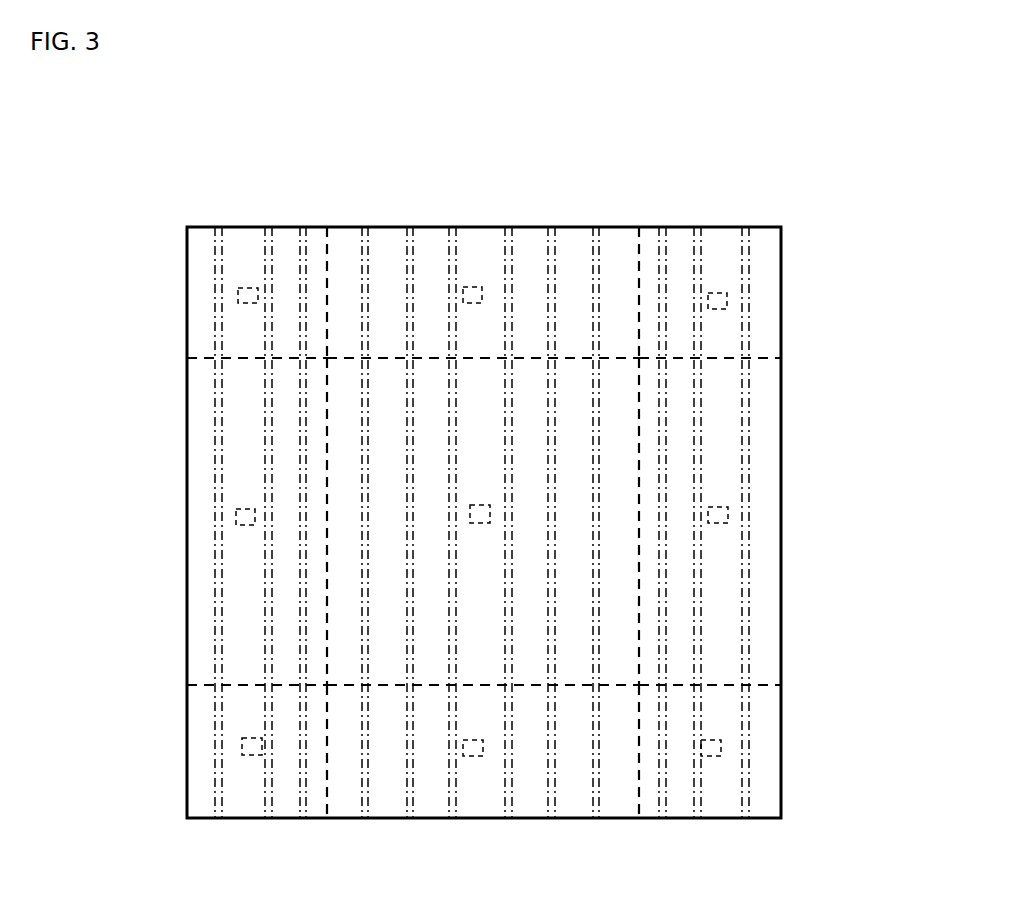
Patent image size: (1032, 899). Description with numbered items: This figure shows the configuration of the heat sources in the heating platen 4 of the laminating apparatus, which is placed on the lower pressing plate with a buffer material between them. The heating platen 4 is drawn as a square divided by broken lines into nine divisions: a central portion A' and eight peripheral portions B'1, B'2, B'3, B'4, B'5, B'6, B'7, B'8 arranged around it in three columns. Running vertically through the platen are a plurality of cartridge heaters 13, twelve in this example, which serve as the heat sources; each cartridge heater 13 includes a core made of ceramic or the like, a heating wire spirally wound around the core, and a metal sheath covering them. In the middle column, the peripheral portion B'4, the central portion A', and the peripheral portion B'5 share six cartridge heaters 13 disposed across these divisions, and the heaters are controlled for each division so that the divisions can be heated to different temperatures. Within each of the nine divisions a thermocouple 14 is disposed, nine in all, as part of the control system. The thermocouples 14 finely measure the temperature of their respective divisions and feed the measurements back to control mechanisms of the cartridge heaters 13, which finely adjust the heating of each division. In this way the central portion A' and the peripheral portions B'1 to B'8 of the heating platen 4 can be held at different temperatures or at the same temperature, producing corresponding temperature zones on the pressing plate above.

The heating platen 4 is at (537, 217).
The cartridge heaters 13 is at (700, 250).
The thermocouples 14 is at (250, 283).
The peripheral portion B'1 is at (198, 292).
The peripheral portion B'2 is at (198, 521).
The peripheral portion B'3 is at (198, 751).
The peripheral portion B'4 is at (522, 264).
The peripheral portion B'5 is at (601, 782).
The peripheral portion B'6 is at (777, 302).
The peripheral portion B'7 is at (776, 618).
The peripheral portion B'8 is at (838, 752).
The central portion A' is at (611, 521).